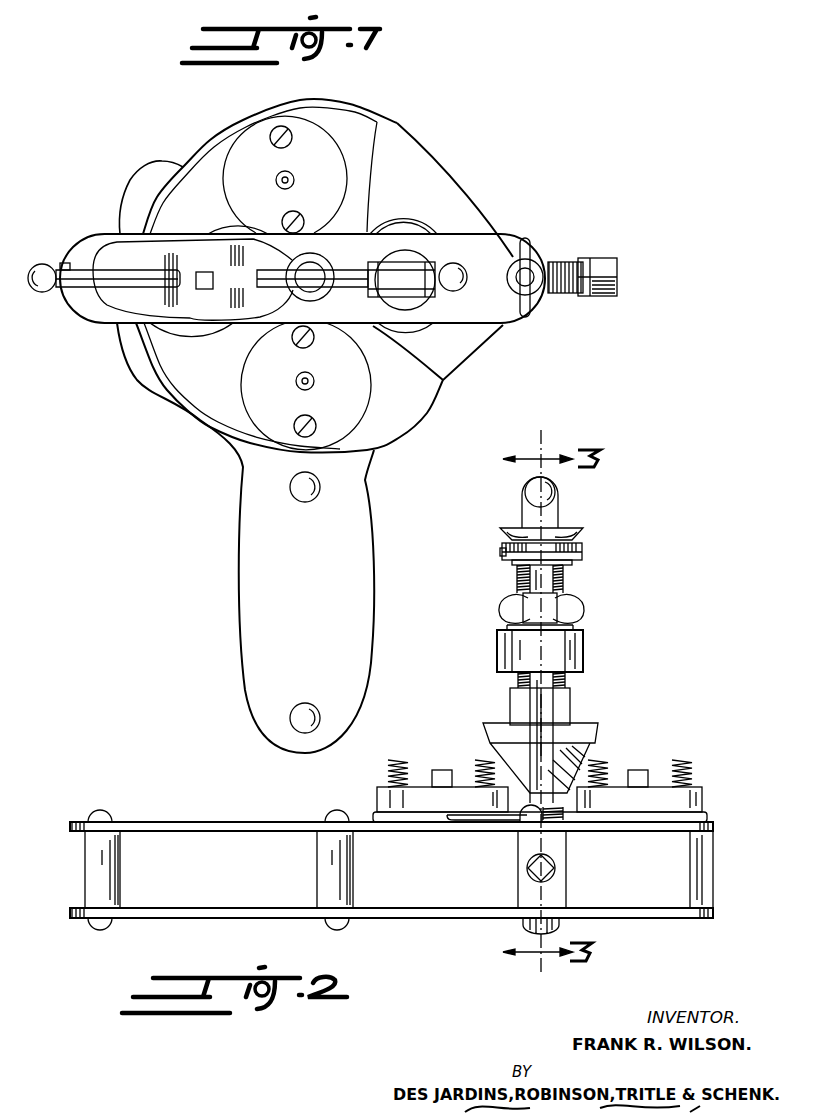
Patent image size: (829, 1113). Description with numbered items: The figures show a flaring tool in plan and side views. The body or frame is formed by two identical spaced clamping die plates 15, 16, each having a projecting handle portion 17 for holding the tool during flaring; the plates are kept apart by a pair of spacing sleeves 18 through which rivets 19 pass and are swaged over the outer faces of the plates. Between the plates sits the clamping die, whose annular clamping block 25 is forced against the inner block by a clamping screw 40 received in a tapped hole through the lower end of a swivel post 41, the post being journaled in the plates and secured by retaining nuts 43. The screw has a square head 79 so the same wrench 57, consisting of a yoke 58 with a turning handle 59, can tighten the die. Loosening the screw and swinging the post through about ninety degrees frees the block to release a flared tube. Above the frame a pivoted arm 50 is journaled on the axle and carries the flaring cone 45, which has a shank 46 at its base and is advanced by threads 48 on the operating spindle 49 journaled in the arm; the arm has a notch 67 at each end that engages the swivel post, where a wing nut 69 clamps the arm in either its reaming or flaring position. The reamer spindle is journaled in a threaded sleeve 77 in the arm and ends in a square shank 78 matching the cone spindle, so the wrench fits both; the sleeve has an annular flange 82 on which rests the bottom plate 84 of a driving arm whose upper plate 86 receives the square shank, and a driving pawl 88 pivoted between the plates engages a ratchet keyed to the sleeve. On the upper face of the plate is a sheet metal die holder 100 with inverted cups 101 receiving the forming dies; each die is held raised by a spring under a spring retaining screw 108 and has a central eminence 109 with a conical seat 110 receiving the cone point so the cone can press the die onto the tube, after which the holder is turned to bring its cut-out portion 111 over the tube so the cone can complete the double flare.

In FIG. 2, the clamping die plate 15 is at (715, 912).
In FIG. 1, the clamping die plate 16 is at (417, 166).
In FIG. 2, the clamping die plate 16 is at (715, 826).
In FIG. 1, the handle portion 17 is at (363, 598).
In FIG. 2, the handle portion 17 is at (226, 908).
In FIG. 2, the spacing sleeve 18 is at (112, 869).
In FIG. 1, the rivet 19 is at (308, 718).
In FIG. 2, the rivet 19 is at (105, 822).
In FIG. 1, the annular clamping block 25 is at (140, 200).
In FIG. 2, the annular clamping block 25 is at (695, 870).
In FIG. 1, the clamping screw 40 is at (566, 293).
In FIG. 2, the swivel post 41 is at (565, 848).
In FIG. 2, the retaining nut 43 is at (530, 813).
In FIG. 2, the flaring cone 45 is at (585, 740).
In FIG. 2, the shank 46 is at (510, 701).
In FIG. 2, the threads 48 is at (563, 681).
In FIG. 2, the operating spindle 49 is at (536, 582).
In FIG. 1, the pivoted arm 50 is at (472, 310).
In FIG. 2, the pivoted arm 50 is at (578, 648).
In FIG. 1, the wrench 57 is at (368, 259).
In FIG. 2, the yoke 58 is at (552, 515).
In FIG. 2, the turning handle 59 is at (552, 494).
In FIG. 1, the notch 67 is at (78, 270).
In FIG. 1, the wing nut 69 is at (535, 262).
In FIG. 2, the wing nut 69 is at (500, 606).
In FIG. 2, the threaded sleeve 77 is at (565, 582).
In FIG. 1, the square shank 78 is at (209, 271).
In FIG. 1, the square head 79 is at (597, 264).
In FIG. 2, the square head 79 is at (558, 868).
In FIG. 2, the annular flange 82 is at (570, 563).
In FIG. 2, the bottom plate 84 is at (500, 556).
In FIG. 2, the upper plate 86 is at (580, 529).
In FIG. 2, the driving pawl 88 is at (580, 550).
In FIG. 1, the die holder 100 is at (172, 395).
In FIG. 2, the die holder 100 is at (706, 815).
In FIG. 1, the inverted cup 101 is at (233, 176).
In FIG. 2, the inverted cup 101 is at (652, 790).
In FIG. 1, the spring retaining screw 108 is at (307, 342).
In FIG. 2, the spring retaining screw 108 is at (398, 760).
In FIG. 1, the central eminence 109 is at (314, 381).
In FIG. 2, the central eminence 109 is at (444, 770).
In FIG. 1, the conical seat 110 is at (294, 180).
In FIG. 1, the cut-out portion 111 is at (370, 205).